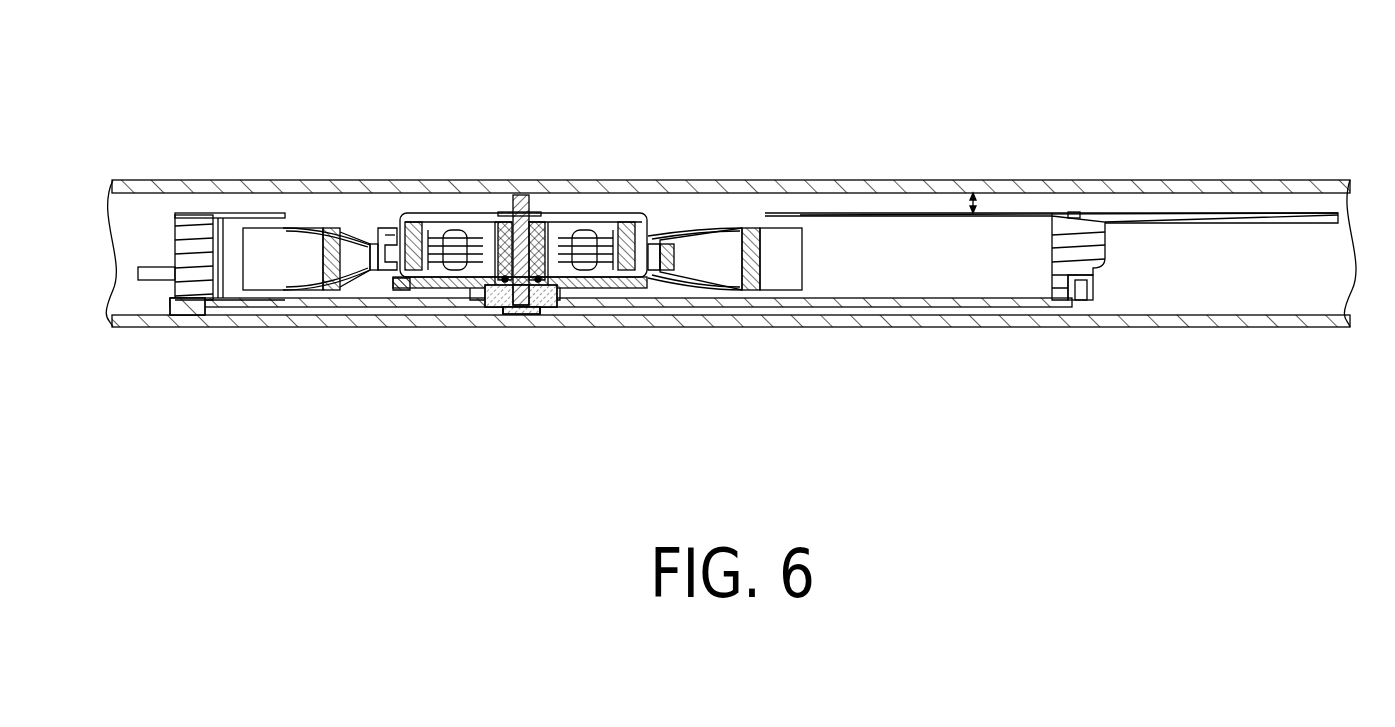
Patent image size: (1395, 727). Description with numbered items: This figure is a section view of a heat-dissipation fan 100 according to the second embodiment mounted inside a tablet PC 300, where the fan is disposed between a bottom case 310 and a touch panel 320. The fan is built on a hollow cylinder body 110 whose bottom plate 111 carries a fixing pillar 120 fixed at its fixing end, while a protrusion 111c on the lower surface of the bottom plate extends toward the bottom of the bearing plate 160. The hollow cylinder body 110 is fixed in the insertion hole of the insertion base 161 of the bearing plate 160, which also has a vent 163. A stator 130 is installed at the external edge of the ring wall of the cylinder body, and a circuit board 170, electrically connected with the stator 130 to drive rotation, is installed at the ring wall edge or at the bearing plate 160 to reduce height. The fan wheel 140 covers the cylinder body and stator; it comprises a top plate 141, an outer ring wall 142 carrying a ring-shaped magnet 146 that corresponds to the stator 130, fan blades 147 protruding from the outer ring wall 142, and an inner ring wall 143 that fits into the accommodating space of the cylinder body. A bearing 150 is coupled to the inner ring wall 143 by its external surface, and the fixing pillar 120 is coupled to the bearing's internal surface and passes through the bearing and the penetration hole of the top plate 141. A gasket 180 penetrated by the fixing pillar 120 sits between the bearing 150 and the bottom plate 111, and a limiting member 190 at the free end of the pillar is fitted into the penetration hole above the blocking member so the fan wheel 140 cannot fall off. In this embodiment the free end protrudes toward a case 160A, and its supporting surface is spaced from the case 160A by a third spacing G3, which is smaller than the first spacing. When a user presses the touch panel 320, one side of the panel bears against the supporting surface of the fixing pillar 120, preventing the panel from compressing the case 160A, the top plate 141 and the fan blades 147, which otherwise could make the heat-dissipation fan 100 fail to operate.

The heat-dissipation fan 100 is at (257, 210).
The hollow cylinder body 110 is at (565, 270).
The bottom plate 111 is at (535, 312).
The protrusion 111c is at (505, 308).
The fixing pillar 120 is at (518, 210).
The stator 130 is at (597, 222).
The fan wheel 140 is at (781, 220).
The top plate 141 is at (447, 214).
The outer ring wall 142 is at (350, 242).
The inner ring wall 143 is at (545, 222).
The ring-shaped magnet 146 is at (418, 222).
The fan blades 147 is at (302, 250).
The bearing 150 is at (573, 293).
The bearing plate 160 is at (980, 316).
The case 160A is at (845, 213).
The insertion base 161 is at (483, 292).
The vent 163 is at (332, 328).
The circuit board 170 is at (398, 288).
The gasket 180 is at (460, 287).
The limiting member 190 is at (532, 212).
The tablet PC 300 is at (750, 229).
The bottom case 310 is at (236, 328).
The touch panel 320 is at (1103, 182).
The third spacing G3 is at (975, 203).